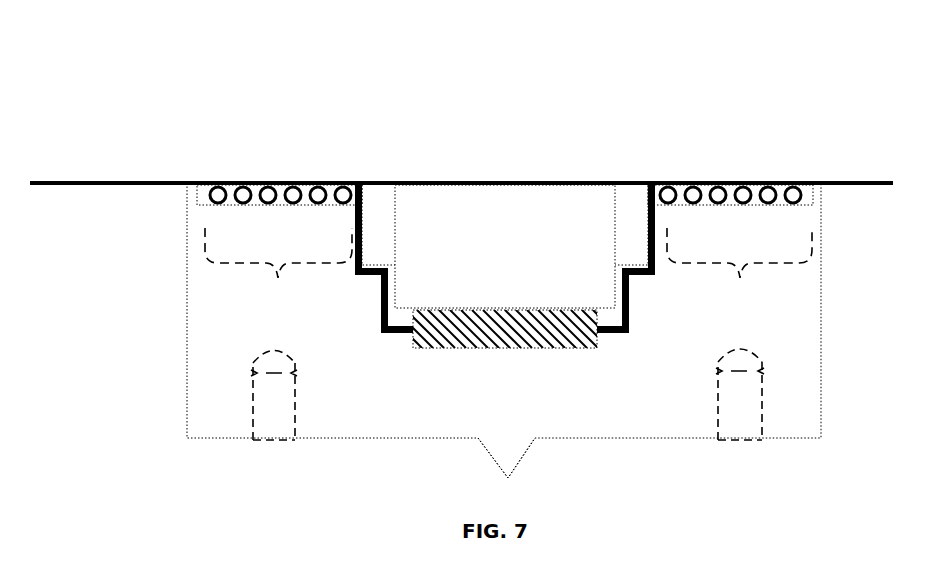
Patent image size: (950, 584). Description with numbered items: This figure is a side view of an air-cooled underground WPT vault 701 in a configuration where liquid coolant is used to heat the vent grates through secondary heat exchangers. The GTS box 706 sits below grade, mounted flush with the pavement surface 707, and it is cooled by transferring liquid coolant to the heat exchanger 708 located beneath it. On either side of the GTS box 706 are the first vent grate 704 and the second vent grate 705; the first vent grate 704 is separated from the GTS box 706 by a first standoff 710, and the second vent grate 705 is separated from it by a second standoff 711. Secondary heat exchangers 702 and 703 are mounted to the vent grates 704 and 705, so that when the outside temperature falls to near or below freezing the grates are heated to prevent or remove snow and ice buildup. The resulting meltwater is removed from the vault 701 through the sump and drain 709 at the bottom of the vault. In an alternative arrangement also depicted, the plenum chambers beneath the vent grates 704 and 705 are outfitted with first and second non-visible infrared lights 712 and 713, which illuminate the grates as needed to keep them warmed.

The air-cooled underground WPT vault 701 is at (182, 310).
The secondary heat exchanger 702 is at (278, 274).
The secondary heat exchanger 703 is at (739, 272).
The first vent grate 704 is at (294, 181).
The second vent grate 705 is at (735, 181).
The GTS box 706 is at (504, 241).
The pavement surface 707 is at (888, 182).
The heat exchanger 708 is at (510, 361).
The sump and drain 709 is at (508, 460).
The first standoff 710 is at (384, 181).
The second standoff 711 is at (626, 181).
The first non-visible infrared light 712 is at (295, 396).
The second non-visible infrared light 713 is at (762, 394).